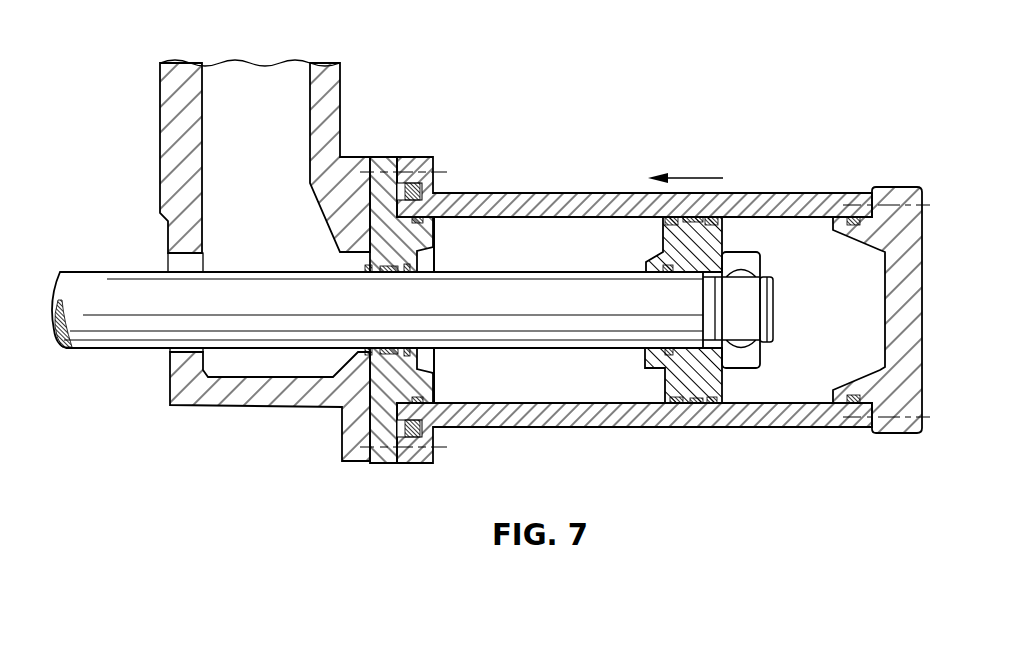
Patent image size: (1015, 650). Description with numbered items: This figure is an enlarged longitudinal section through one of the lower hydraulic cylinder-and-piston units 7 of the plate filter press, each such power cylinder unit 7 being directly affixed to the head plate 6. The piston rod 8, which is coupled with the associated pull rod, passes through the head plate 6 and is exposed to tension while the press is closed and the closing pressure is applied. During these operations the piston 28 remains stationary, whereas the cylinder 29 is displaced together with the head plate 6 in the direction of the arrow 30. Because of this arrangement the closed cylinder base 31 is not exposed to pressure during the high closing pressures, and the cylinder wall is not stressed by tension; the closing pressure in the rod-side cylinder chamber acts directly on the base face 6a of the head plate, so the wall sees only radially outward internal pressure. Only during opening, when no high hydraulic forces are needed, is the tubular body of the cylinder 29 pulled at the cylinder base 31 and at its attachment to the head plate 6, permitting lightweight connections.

The head plate 6 is at (333, 100).
The base face of the head plate 6a is at (372, 183).
The hydraulic cylinder-and-piston unit 7 is at (611, 160).
The piston rod 8 is at (113, 335).
The piston 28 is at (697, 387).
The cylinder 29 is at (775, 197).
The arrow 30 is at (705, 178).
The cylinder base 31 is at (913, 232).